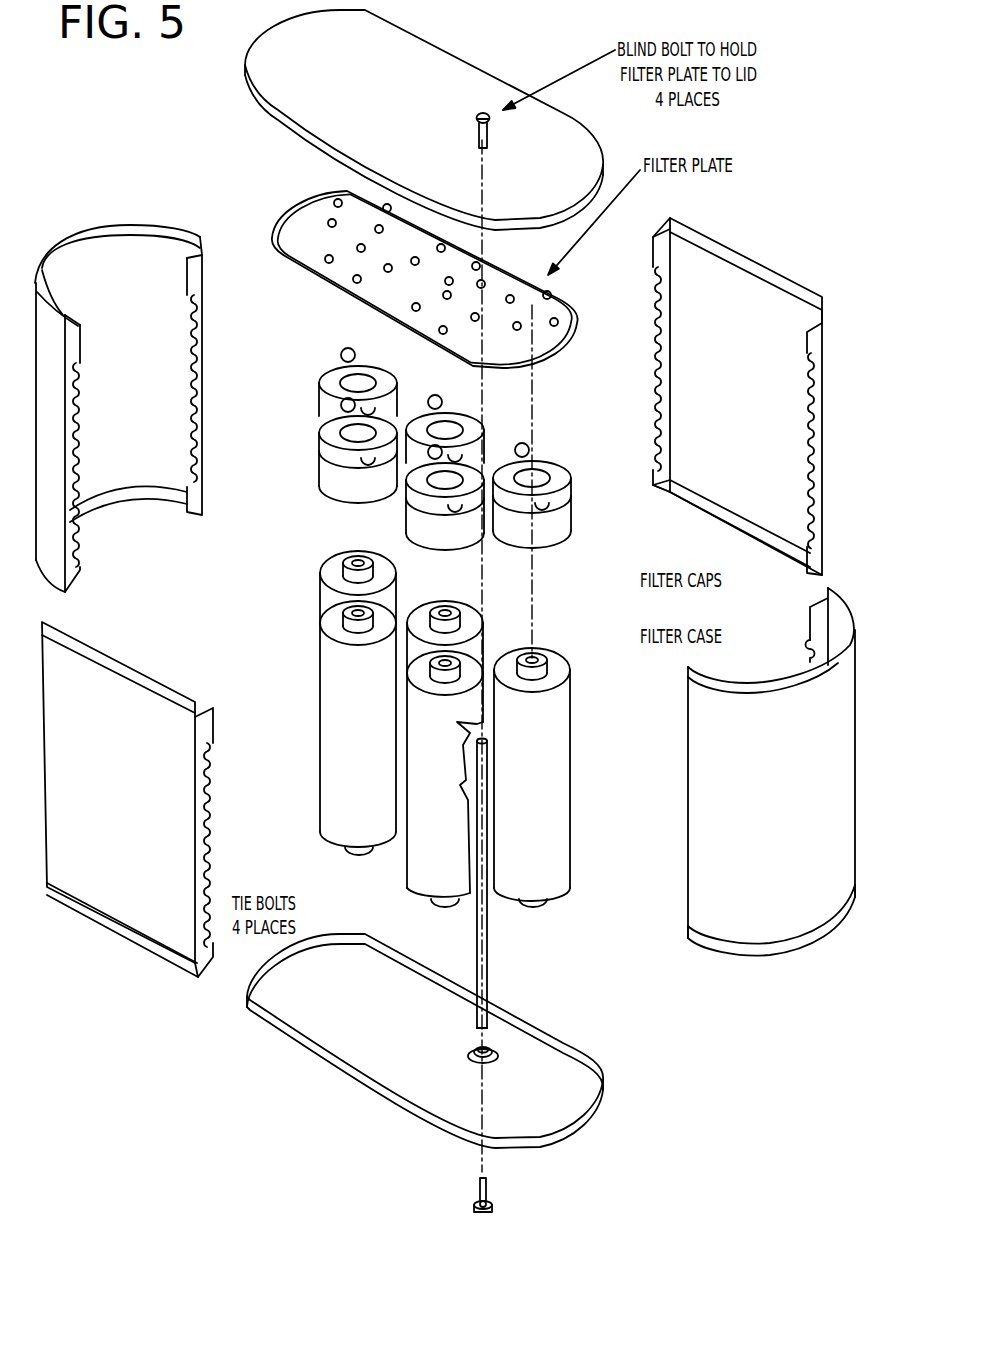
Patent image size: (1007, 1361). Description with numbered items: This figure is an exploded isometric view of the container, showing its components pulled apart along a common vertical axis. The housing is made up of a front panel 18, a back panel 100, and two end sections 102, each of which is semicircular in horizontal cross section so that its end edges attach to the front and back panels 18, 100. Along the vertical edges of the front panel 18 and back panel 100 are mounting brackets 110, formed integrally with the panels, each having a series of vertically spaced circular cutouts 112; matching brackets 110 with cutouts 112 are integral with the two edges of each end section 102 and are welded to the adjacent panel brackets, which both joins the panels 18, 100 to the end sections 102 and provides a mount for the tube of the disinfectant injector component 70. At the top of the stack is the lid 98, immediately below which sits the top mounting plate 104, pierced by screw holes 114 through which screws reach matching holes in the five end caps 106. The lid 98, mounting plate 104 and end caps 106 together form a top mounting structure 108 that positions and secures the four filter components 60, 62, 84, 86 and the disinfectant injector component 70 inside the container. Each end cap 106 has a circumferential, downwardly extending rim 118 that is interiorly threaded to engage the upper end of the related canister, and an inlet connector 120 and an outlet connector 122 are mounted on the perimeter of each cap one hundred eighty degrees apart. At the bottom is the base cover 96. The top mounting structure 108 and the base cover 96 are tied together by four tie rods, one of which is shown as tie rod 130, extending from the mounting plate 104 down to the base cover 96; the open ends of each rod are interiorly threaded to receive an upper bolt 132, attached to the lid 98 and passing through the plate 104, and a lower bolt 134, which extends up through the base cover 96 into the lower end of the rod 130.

The front panel 18 is at (130, 915).
The filter component 60 is at (560, 790).
The filter component 62 is at (420, 853).
The disinfectant injector component 70 is at (472, 621).
The filter component 84 is at (325, 600).
The filter component 86 is at (325, 650).
The base cover 96 is at (553, 1055).
The lid 98 is at (458, 62).
The back panel 100 is at (730, 278).
The end section 102 is at (98, 255).
The top mounting plate 104 is at (378, 278).
The end cap 106 is at (325, 388).
The top mounting structure 108 is at (247, 172).
The mounting bracket 110 is at (205, 270).
The circular cutout 112 is at (200, 350).
The screw hole 114 is at (386, 272).
The rim 118 is at (420, 505).
The inlet connector 120 is at (521, 445).
The outlet connector 122 is at (555, 517).
The tie rod 130 is at (490, 948).
The upper bolt 132 is at (485, 108).
The lower bolt 134 is at (478, 1195).